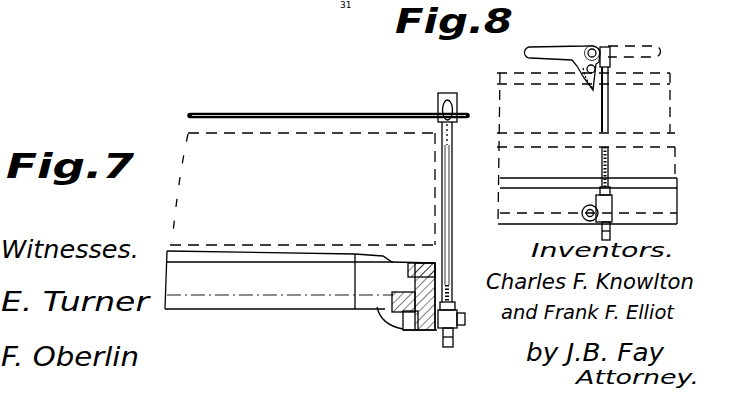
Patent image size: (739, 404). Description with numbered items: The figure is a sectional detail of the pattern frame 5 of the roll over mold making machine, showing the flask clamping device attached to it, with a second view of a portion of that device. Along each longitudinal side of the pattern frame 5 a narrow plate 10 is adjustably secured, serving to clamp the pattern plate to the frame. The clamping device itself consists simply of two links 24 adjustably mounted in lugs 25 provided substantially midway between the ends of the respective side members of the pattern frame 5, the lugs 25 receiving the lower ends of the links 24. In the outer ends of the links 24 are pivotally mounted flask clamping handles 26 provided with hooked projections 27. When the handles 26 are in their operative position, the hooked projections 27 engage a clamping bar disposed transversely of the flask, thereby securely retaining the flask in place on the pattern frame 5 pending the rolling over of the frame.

In FIG. 7, the pattern frame 5 is at (284, 292).
In FIG. 7, the narrow plate 10 is at (436, 267).
In FIG. 7, the link 24 is at (450, 236).
In FIG. 7, the lug 25 is at (457, 322).
In FIG. 8, the lug 25 is at (612, 212).
In FIG. 7, the flask clamping handle 26 is at (440, 106).
In FIG. 8, the flask clamping handle 26 is at (549, 50).
In FIG. 8, the hooked projection 27 is at (586, 82).